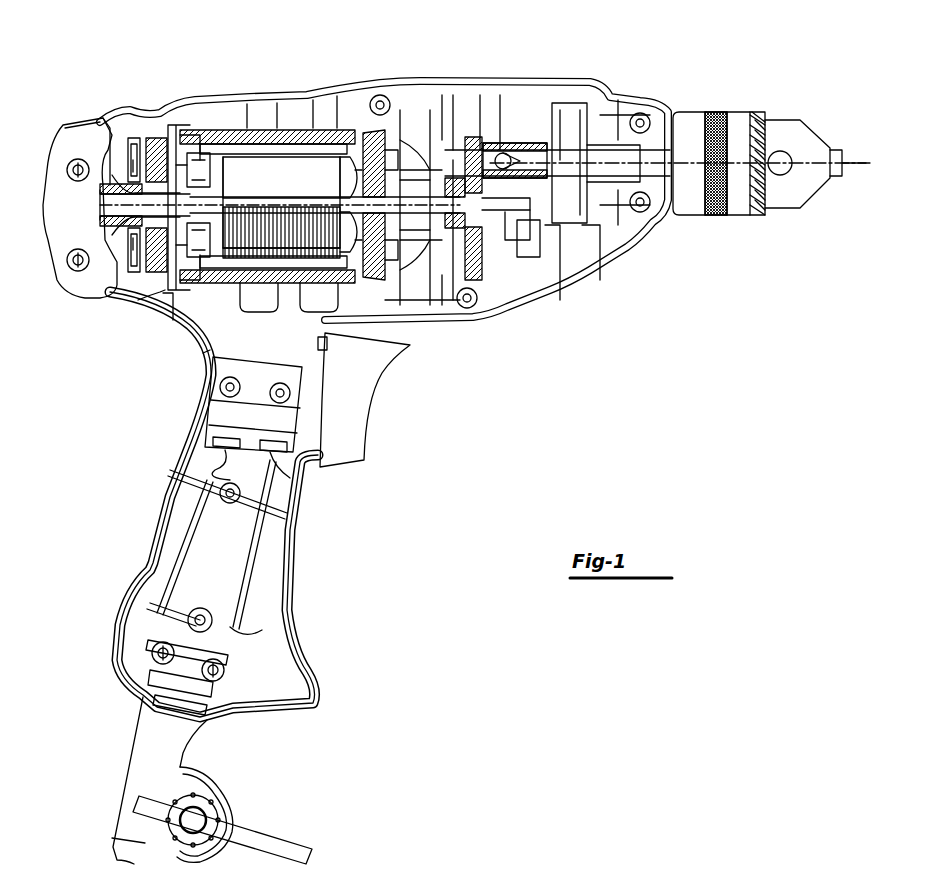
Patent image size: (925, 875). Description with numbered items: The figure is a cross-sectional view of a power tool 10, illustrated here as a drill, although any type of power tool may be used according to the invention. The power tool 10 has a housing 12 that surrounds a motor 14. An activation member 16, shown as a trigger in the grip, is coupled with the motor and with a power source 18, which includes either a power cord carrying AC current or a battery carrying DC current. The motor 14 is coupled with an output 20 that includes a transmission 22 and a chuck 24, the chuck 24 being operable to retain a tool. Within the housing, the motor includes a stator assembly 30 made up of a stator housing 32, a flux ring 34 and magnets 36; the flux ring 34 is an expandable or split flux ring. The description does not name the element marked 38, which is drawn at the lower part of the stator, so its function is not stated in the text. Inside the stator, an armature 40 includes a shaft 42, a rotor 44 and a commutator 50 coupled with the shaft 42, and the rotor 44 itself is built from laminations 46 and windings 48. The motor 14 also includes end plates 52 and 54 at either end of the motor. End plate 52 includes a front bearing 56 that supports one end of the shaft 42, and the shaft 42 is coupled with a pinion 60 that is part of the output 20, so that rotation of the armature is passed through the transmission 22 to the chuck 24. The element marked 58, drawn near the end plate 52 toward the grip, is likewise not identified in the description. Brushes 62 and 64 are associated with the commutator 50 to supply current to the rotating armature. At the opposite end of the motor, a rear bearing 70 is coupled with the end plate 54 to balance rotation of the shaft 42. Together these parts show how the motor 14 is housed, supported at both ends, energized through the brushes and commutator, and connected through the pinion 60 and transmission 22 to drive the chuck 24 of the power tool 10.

The power tool 10 is at (495, 380).
The housing 12 is at (172, 340).
The motor 14 is at (170, 128).
The activation member 16 is at (360, 380).
The power source 18 is at (177, 740).
The output 20 is at (558, 200).
The transmission 22 is at (583, 115).
The chuck 24 is at (787, 210).
The stator assembly 30 is at (198, 290).
The stator housing 32 is at (232, 135).
The flux ring 34 is at (262, 144).
The magnets 36 is at (297, 150).
The stator lamination 38 is at (300, 282).
The armature 40 is at (365, 150).
The shaft 42 is at (102, 202).
The rotor 44 is at (105, 215).
The laminations 46 is at (268, 212).
The windings 48 is at (340, 185).
The commutator 50 is at (140, 160).
The end plate 52 is at (385, 280).
The end plate 54 is at (122, 192).
The front bearing 56 is at (395, 185).
The gear housing support 58 is at (460, 300).
The pinion 60 is at (510, 212).
The brush 62 is at (150, 292).
The brush 64 is at (160, 148).
The rear bearing 70 is at (60, 168).